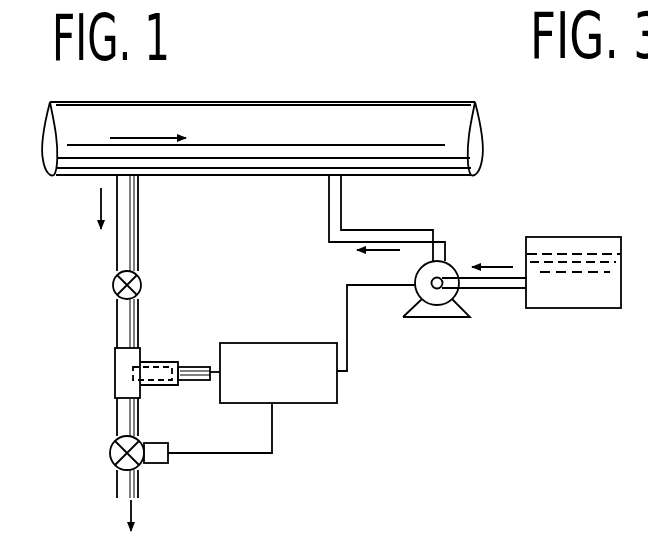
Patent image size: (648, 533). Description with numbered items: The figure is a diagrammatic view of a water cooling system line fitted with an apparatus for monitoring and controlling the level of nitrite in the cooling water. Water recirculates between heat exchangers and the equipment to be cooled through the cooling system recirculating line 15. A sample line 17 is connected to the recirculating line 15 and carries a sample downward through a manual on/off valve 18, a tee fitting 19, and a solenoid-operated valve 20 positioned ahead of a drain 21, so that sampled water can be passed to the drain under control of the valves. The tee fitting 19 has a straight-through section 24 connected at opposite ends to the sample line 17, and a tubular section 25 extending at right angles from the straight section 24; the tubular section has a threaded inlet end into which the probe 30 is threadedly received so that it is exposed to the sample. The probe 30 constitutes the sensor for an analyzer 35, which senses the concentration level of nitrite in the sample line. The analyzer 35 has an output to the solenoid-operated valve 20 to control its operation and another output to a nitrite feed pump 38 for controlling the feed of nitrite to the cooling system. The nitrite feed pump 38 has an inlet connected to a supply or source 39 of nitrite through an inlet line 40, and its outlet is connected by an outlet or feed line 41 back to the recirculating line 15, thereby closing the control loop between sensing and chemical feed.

The cooling system recirculating line 15 is at (434, 100).
The sample line 17 is at (120, 327).
The manual on/off valve 18 is at (141, 278).
The tee fitting 19 is at (112, 368).
The solenoid-operated valve 20 is at (144, 431).
The drain 21 is at (136, 500).
The straight-through section 24 is at (117, 391).
The tubular section 25 is at (152, 364).
The probe 30 is at (189, 364).
The analyzer 35 is at (286, 408).
The nitrite feed pump 38 is at (415, 292).
The supply or source of nitrite 39 is at (566, 309).
The inlet line 40 is at (488, 291).
The outlet or feed line 41 is at (389, 228).